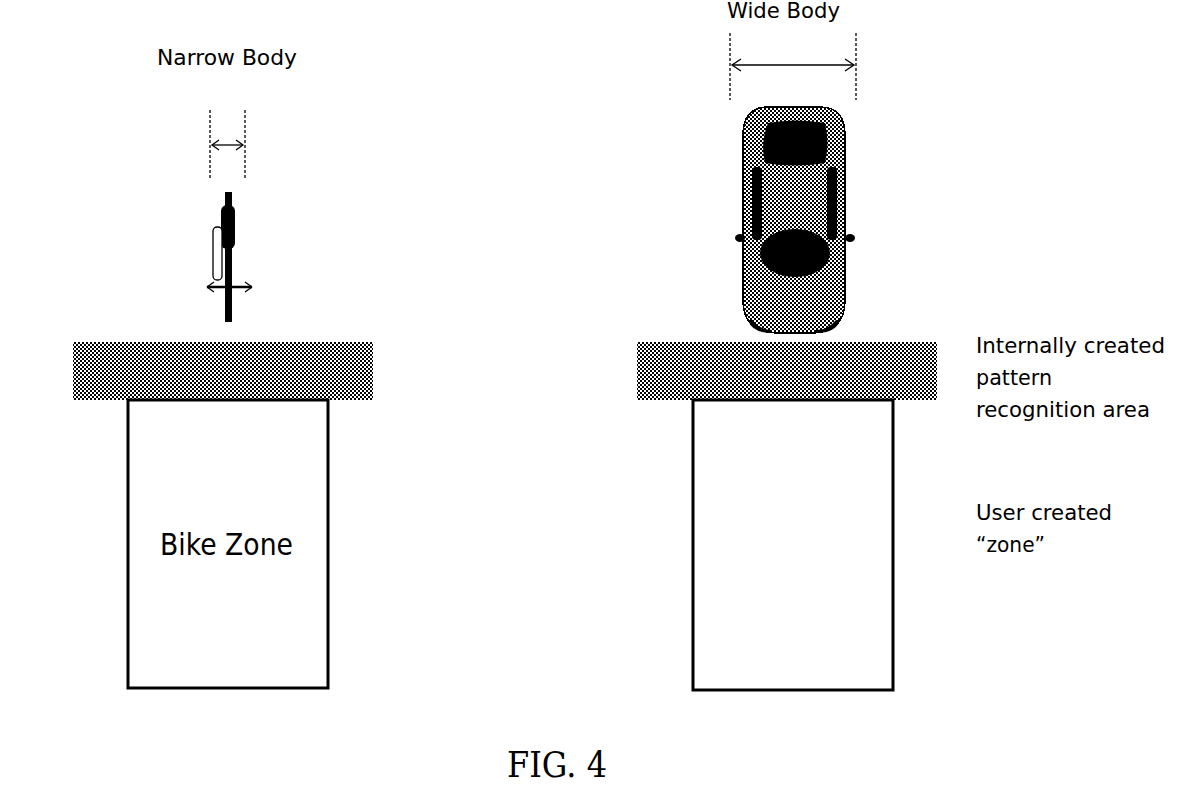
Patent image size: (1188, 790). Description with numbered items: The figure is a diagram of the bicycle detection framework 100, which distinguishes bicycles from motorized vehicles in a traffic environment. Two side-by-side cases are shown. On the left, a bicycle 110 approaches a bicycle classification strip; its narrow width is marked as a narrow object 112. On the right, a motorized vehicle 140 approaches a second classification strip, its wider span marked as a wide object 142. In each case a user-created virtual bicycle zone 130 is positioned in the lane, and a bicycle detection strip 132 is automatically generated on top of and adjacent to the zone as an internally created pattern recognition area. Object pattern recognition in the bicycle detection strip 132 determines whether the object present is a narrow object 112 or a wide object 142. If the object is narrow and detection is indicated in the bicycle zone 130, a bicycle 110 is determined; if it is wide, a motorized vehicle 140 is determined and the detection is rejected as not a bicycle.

The bicycle detection framework 100 is at (940, 145).
The bicycle 110 is at (206, 248).
The narrow object 112 is at (247, 122).
The virtual bicycle zone 130 is at (897, 607).
The bicycle detection strip 132 is at (635, 339).
The motorized vehicle 140 is at (849, 260).
The wide object 142 is at (728, 52).